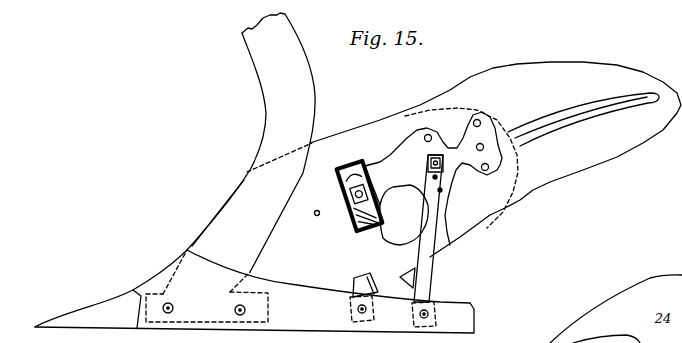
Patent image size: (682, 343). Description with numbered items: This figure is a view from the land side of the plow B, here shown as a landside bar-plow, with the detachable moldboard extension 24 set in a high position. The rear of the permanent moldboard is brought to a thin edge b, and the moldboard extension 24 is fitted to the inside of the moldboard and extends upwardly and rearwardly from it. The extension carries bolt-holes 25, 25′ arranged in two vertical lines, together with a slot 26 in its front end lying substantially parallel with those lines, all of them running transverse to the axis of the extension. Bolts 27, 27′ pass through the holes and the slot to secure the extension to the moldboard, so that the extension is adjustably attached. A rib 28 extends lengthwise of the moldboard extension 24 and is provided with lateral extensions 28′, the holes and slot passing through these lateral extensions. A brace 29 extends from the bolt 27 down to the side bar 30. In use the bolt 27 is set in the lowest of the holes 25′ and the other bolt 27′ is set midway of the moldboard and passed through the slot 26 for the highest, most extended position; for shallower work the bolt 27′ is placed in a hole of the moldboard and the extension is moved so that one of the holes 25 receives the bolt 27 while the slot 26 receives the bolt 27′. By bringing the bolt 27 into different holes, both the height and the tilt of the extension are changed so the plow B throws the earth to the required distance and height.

The detachable moldboard extension 24 is at (495, 159).
The bolt-holes 25 is at (487, 166).
The bolt-holes 25′ is at (440, 190).
The slot 26 is at (382, 238).
The bolt 27 is at (430, 162).
The bolt 27′ is at (347, 223).
The rib 28 is at (463, 166).
The lateral extension 28′ is at (500, 157).
The brace 29 is at (423, 272).
The side bar 30 is at (460, 318).
The thin edge of moldboard b is at (316, 181).
The plow B is at (252, 252).